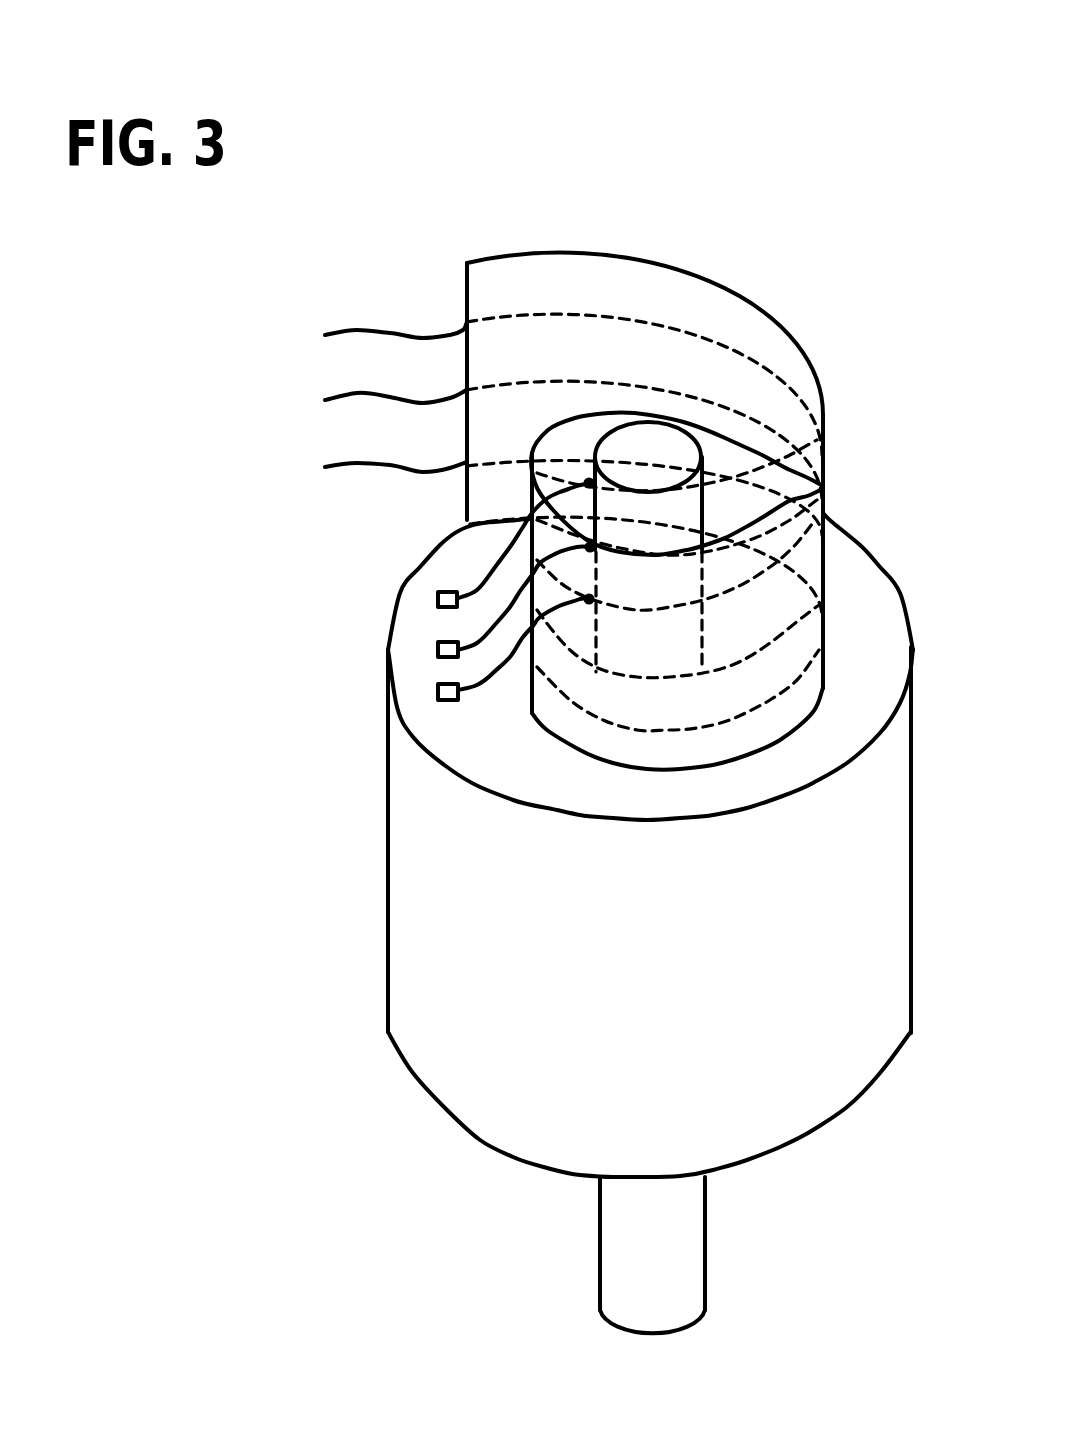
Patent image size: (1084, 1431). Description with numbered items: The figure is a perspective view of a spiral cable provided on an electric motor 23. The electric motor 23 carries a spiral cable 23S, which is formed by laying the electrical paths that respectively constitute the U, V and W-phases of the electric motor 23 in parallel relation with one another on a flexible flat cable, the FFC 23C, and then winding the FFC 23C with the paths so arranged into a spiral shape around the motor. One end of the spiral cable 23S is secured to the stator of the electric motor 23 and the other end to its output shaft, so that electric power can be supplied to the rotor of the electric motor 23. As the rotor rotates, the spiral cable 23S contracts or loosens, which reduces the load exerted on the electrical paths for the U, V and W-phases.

The electric motor 23 is at (460, 98).
The spiral cable 23S is at (688, 270).
The FFC (Flexible Flat Cable) 23C is at (757, 342).